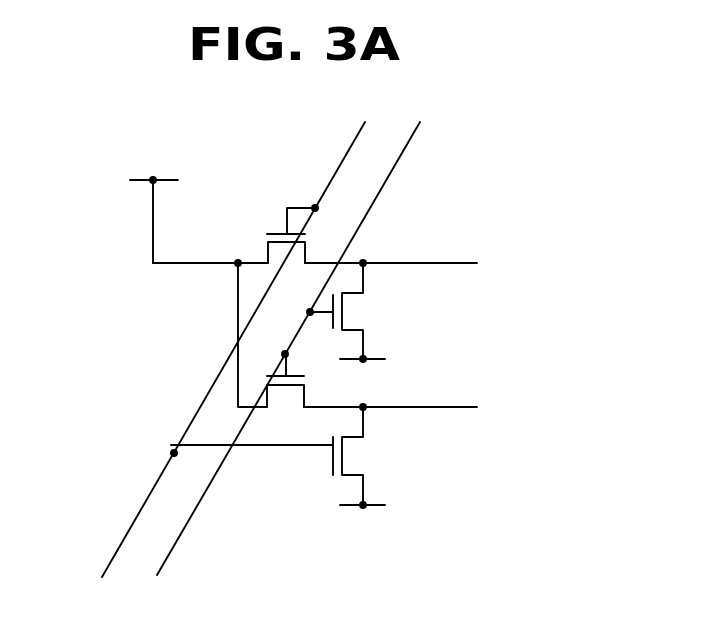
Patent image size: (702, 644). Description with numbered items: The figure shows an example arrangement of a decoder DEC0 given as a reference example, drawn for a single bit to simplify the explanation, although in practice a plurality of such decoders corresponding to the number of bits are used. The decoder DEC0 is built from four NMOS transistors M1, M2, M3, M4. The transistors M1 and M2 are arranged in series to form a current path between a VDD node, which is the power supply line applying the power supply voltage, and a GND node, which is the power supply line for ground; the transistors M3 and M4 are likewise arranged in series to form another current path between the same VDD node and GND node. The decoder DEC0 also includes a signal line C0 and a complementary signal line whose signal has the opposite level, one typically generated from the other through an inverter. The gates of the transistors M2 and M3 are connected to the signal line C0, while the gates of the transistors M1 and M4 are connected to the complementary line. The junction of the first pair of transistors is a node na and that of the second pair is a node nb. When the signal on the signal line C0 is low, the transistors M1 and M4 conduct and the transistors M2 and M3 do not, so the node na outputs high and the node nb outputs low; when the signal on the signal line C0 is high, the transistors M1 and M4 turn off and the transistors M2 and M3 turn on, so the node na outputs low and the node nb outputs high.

The decoder DEC0 is at (325, 376).
The NMOS transistor M1 is at (281, 233).
The NMOS transistor M2 is at (353, 311).
The NMOS transistor M3 is at (285, 395).
The NMOS transistor M4 is at (285, 456).
The VDD node VDD is at (153, 205).
The GND node GND is at (394, 435).
The node na is at (330, 261).
The node nb is at (373, 343).
The signal line C0 is at (279, 364).